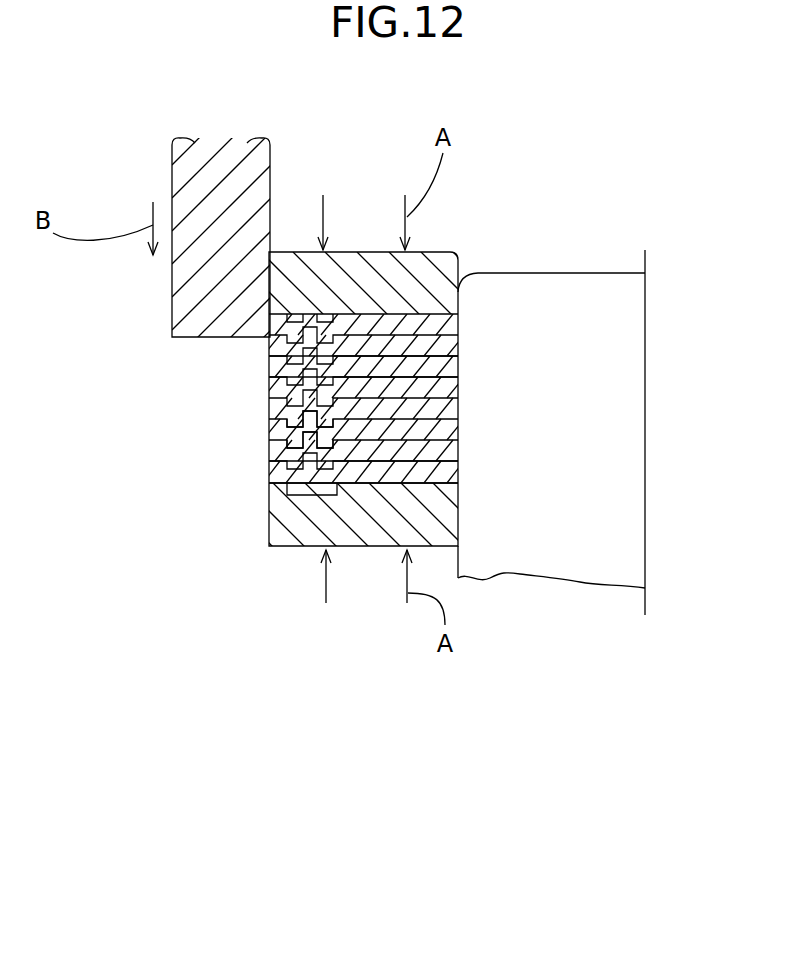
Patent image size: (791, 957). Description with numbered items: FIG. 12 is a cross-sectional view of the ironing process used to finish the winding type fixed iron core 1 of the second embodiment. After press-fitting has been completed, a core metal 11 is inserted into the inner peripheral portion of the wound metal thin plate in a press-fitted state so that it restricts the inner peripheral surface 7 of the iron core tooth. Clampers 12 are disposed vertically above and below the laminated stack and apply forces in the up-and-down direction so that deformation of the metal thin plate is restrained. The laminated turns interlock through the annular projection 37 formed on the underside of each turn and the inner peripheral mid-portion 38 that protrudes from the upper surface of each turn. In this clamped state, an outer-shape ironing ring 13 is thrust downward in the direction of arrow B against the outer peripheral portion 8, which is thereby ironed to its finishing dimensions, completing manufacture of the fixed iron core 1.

The outer-shape ironing ring 13 is at (182, 180).
The clampers 12 is at (405, 288).
The fixed iron core 1 is at (447, 325).
The outer peripheral portion 8 is at (269, 366).
The annular projection 37 is at (300, 425).
The inner peripheral mid-portion 38 is at (297, 458).
The inner peripheral surface 7 is at (460, 472).
The core metal 11 is at (617, 328).